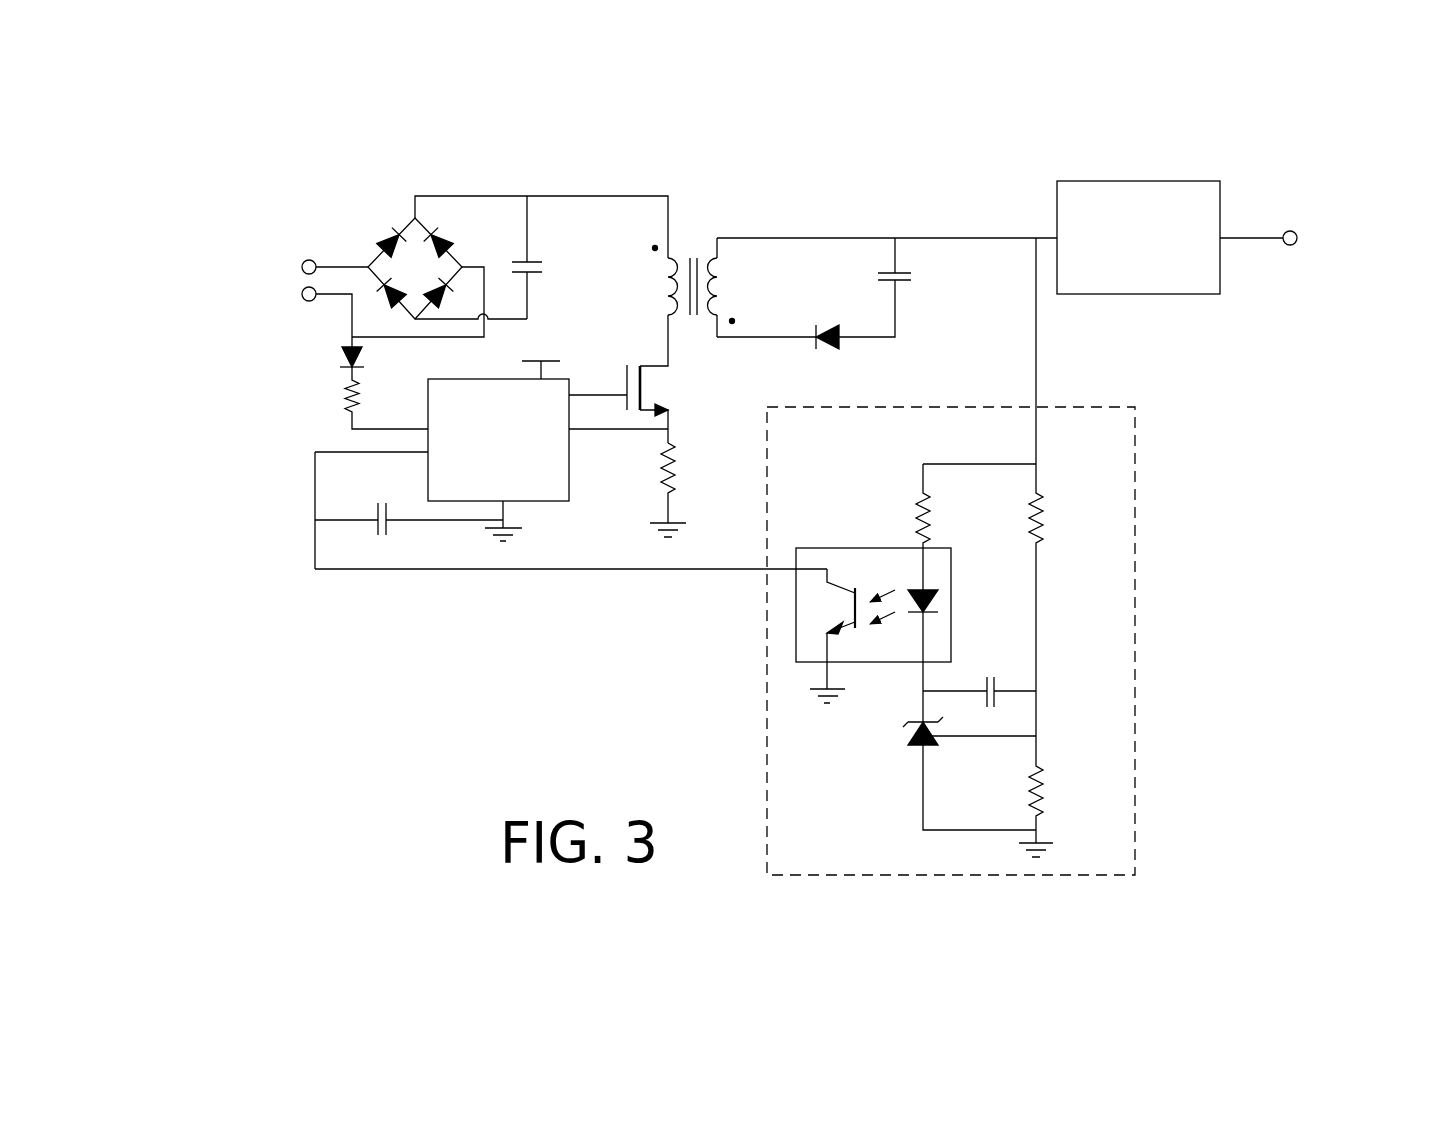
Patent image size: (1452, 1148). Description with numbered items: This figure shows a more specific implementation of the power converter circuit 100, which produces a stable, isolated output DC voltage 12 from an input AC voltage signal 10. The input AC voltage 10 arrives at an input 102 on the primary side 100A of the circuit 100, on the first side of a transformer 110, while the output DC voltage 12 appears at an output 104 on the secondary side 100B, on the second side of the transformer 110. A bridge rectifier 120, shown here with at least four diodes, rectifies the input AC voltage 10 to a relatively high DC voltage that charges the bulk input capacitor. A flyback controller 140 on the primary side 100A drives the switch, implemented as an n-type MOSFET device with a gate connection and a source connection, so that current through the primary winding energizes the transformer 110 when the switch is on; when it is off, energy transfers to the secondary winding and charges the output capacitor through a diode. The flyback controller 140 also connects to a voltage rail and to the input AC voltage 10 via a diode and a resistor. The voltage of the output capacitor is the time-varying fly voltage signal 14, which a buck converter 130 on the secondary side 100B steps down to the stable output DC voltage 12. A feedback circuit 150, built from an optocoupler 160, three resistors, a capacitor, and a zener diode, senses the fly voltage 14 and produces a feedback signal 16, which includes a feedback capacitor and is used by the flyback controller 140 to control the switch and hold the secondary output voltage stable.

The input AC voltage signal 10 is at (265, 246).
The output DC voltage 12 is at (1332, 200).
The fly voltage signal 14 is at (887, 218).
The feedback signal 16 is at (571, 593).
The power converter circuit 100 is at (845, 122).
The primary side 100A is at (578, 178).
The secondary side 100B is at (947, 165).
The input 102 is at (310, 228).
The output 104 is at (1288, 218).
The transformer 110 is at (710, 225).
The bridge rectifier 120 is at (422, 180).
The buck converter 130 is at (1138, 237).
The flyback controller 140 is at (498, 417).
The feedback circuit 150 is at (842, 556).
The optocoupler 160 is at (778, 638).